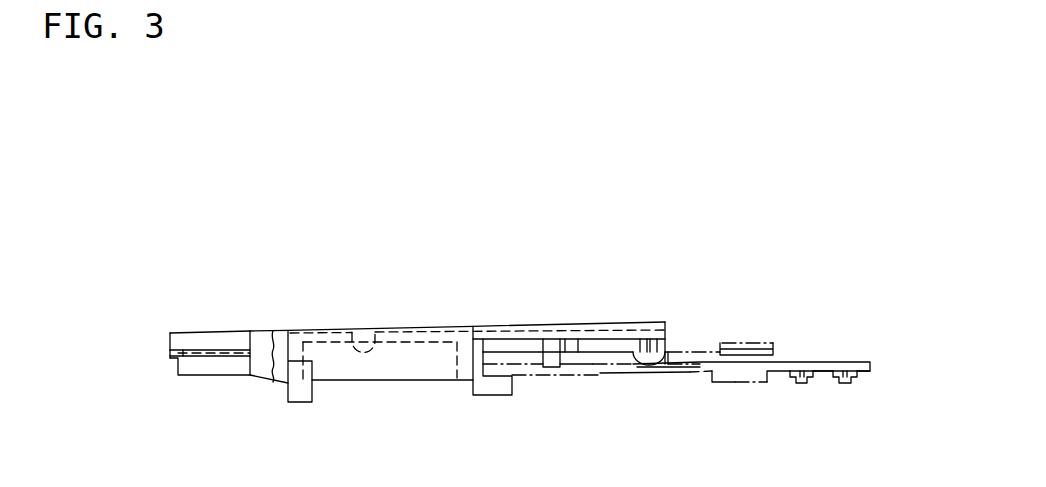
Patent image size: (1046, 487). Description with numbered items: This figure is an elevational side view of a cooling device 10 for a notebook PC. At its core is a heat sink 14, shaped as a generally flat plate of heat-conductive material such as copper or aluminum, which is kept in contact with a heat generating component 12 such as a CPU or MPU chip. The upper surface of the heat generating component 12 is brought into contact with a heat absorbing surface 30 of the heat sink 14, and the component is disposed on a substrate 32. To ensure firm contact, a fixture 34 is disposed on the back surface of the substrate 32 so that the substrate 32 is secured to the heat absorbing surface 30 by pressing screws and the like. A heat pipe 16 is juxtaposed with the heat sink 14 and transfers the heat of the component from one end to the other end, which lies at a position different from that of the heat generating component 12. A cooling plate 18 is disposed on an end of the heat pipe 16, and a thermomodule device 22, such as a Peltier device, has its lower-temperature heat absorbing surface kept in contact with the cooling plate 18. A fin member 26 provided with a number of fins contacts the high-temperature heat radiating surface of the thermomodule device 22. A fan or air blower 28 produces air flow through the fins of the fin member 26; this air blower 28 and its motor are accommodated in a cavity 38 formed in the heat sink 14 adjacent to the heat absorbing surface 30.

The cooling device 10 is at (663, 232).
The heat generating component 12 is at (626, 360).
The heat sink 14 is at (481, 327).
The heat pipe 16 is at (543, 332).
The cooling plate 18 is at (231, 332).
The thermomodule device 22 is at (190, 343).
The fin member 26 is at (221, 361).
The air blower 28 is at (395, 355).
The heat absorbing surface 30 is at (668, 361).
The substrate 32 is at (563, 366).
The fixture 34 is at (505, 396).
The cavity 38 is at (376, 331).